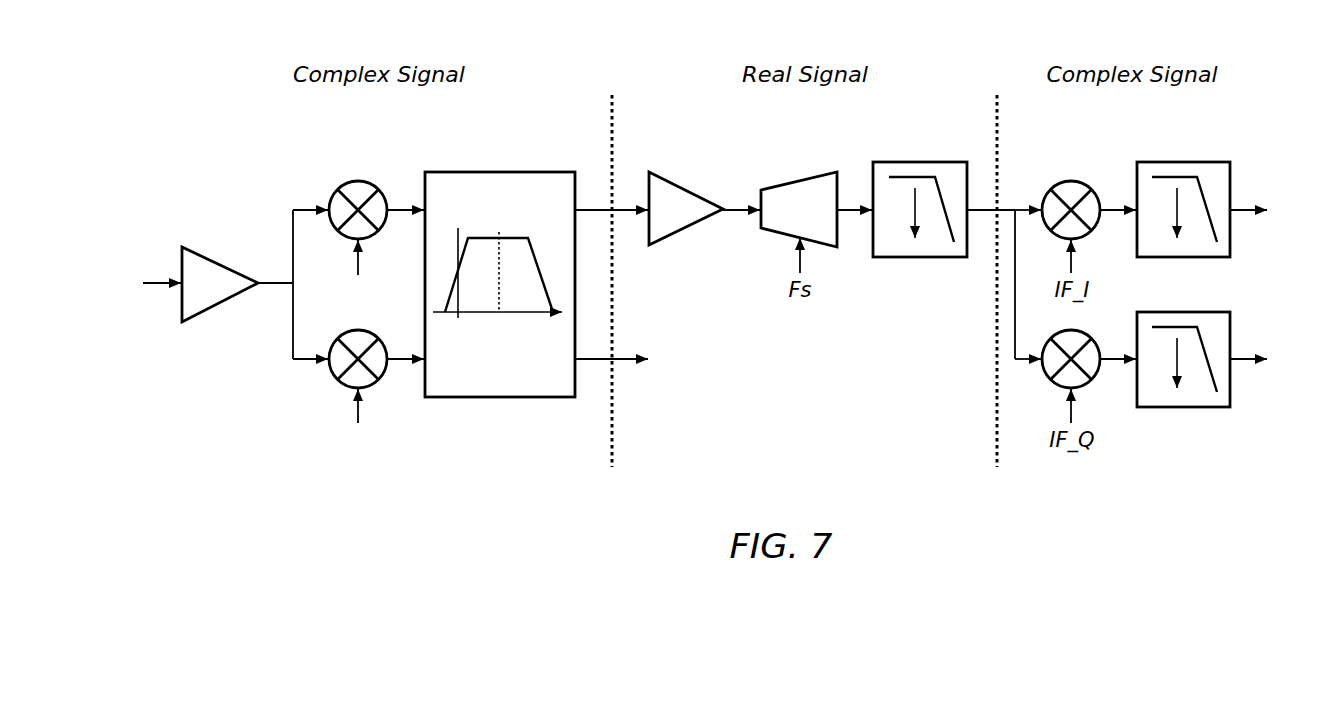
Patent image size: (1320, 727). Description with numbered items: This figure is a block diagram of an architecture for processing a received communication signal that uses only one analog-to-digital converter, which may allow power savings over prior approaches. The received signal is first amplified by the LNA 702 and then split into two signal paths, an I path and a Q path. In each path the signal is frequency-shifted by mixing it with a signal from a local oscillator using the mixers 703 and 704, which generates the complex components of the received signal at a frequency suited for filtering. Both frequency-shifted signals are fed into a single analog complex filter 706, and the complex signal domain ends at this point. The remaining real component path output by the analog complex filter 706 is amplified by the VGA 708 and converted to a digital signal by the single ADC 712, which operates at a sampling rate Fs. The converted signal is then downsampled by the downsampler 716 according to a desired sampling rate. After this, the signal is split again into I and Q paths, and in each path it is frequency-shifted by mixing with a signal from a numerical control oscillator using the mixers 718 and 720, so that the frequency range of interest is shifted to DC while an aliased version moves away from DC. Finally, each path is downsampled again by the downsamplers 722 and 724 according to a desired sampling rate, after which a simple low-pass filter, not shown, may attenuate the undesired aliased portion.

The LNA 702 is at (201, 248).
The mixer 703 is at (334, 381).
The mixer 704 is at (352, 180).
The analog complex filter 706 is at (490, 172).
The VGA 708 is at (673, 180).
The ADC 712 is at (793, 180).
The downsampler 716 is at (914, 162).
The mixer 718 is at (1065, 180).
The mixer 720 is at (1047, 379).
The downsampler 722 is at (1189, 162).
The downsampler 724 is at (1204, 408).